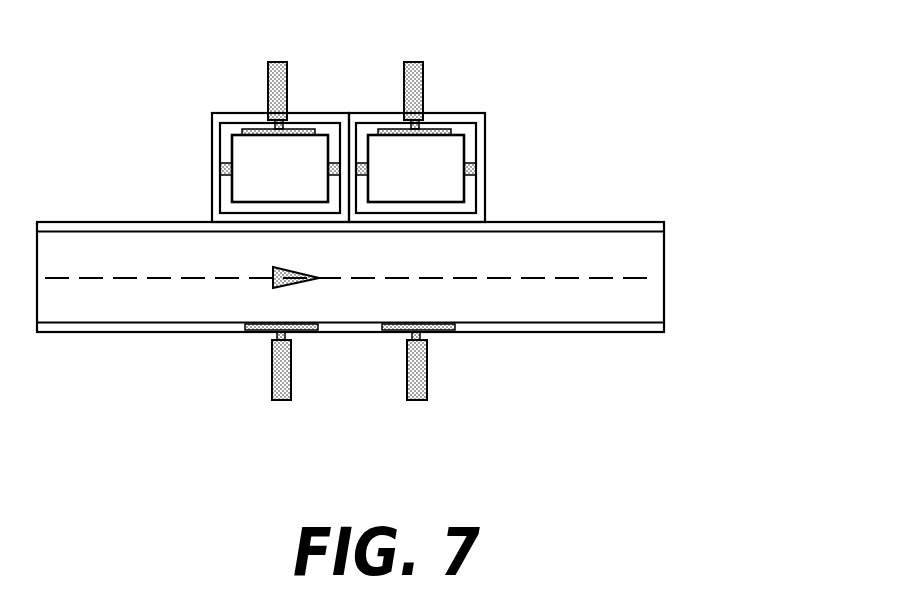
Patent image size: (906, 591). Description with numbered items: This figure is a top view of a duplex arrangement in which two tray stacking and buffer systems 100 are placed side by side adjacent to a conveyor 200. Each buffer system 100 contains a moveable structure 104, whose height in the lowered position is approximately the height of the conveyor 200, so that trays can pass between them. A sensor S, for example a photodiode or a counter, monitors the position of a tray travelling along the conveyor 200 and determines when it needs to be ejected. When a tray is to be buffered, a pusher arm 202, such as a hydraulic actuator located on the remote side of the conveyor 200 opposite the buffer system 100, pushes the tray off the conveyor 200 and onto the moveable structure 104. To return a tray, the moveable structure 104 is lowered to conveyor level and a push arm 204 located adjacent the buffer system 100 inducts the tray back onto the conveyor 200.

The buffer system 100 is at (212, 166).
The moveable structure 104 is at (447, 156).
The conveyor 200 is at (664, 277).
The pusher arm 202 is at (291, 372).
The push arm 204 is at (288, 63).
The sensor S is at (456, 258).